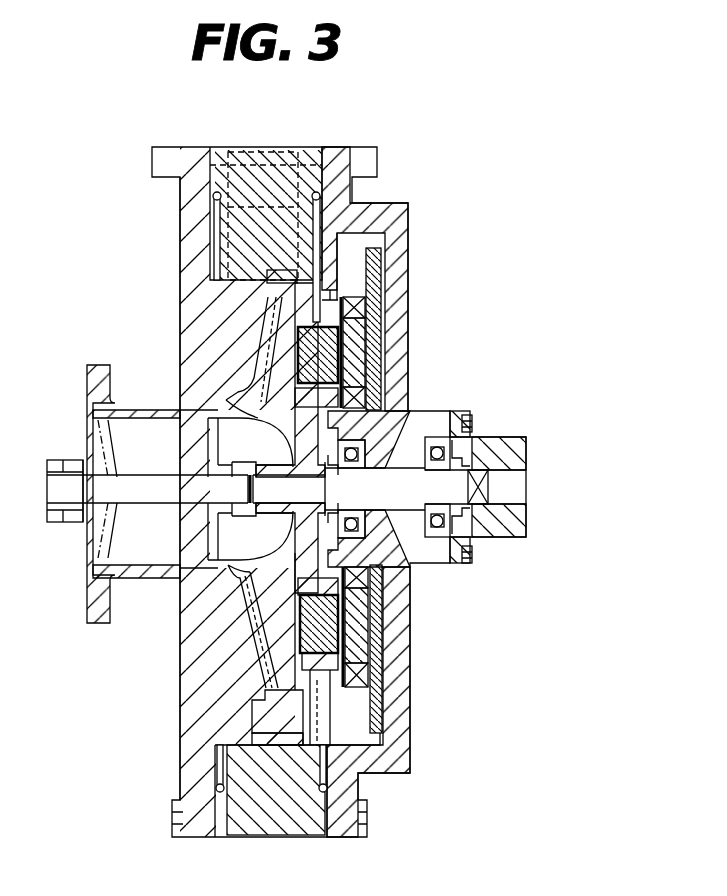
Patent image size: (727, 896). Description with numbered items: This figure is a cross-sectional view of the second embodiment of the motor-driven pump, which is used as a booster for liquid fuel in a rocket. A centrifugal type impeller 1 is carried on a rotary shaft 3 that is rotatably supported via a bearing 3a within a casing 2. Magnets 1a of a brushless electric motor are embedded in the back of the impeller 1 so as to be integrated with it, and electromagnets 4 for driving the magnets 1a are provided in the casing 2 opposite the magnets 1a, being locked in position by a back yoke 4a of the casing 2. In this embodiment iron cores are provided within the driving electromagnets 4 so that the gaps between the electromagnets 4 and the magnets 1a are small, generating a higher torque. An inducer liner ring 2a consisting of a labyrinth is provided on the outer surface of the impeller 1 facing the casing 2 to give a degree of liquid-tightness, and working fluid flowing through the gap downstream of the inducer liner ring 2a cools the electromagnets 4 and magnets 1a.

The impeller 1 is at (183, 690).
The magnets 1a is at (372, 625).
The casing 2 is at (341, 147).
The inducer liner ring 2a is at (232, 401).
The rotary shaft 3 is at (415, 420).
The bearing 3a is at (447, 562).
The electromagnets 4 is at (381, 392).
The back yoke 4a is at (385, 306).